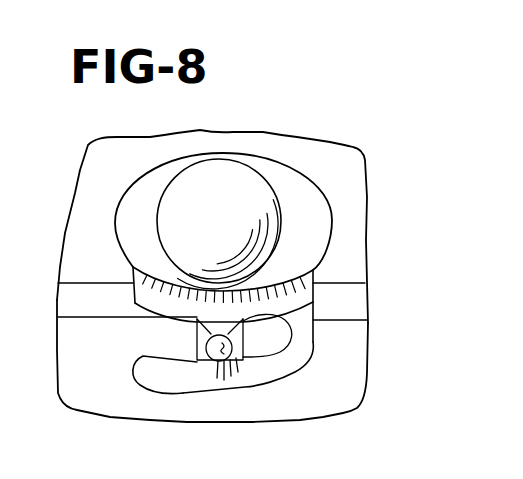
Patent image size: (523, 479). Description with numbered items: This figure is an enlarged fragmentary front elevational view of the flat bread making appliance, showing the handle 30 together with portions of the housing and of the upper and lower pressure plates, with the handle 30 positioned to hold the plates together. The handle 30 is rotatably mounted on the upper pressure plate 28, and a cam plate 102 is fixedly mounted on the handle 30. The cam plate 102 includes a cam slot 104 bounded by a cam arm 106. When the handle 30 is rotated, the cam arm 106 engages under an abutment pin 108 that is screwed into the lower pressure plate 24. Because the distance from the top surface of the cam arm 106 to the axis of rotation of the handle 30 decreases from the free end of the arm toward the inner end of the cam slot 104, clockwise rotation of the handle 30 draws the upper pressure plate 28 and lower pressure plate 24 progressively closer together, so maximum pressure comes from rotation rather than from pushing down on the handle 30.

The lower pressure plate 24 is at (103, 393).
The upper pressure plate 28 is at (85, 208).
The handle 30 is at (242, 170).
The cam plate 102 is at (303, 302).
The cam slot 104 is at (163, 345).
The cam arm 106 is at (173, 375).
The abutment pin 108 is at (240, 360).